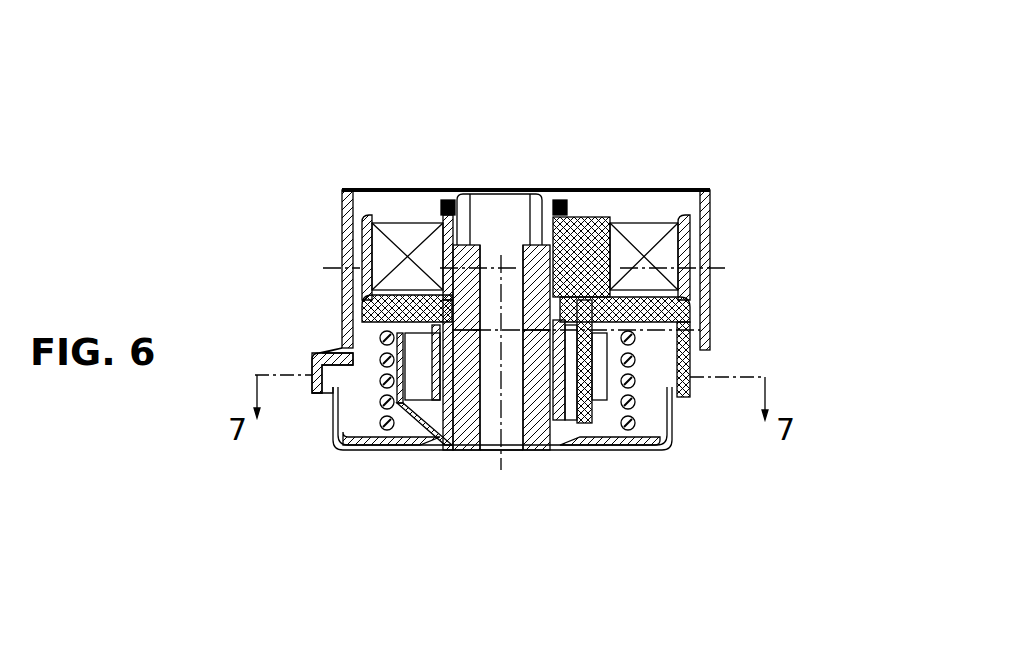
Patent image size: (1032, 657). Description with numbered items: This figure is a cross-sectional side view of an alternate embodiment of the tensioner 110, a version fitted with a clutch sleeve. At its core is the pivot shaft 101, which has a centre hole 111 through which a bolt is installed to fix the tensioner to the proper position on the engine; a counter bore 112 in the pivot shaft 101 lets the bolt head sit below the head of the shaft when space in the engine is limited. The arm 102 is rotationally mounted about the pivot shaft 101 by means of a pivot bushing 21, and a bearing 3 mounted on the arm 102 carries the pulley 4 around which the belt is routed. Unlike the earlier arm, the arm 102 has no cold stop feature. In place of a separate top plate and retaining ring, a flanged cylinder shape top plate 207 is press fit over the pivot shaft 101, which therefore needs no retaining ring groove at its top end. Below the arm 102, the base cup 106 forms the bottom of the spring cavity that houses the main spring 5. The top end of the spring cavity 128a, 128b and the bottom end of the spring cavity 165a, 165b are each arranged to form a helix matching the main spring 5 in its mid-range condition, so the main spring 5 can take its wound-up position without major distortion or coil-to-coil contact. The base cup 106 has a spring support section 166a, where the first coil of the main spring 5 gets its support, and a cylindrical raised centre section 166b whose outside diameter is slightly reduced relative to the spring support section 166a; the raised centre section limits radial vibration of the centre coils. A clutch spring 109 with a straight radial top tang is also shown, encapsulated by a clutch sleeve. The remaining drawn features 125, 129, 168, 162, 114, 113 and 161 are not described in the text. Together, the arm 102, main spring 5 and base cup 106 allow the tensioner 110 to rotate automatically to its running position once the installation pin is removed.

The tensioner 110 is at (270, 92).
The counter bore 112 is at (470, 192).
The centre hole 111 is at (495, 200).
The pivot shaft 101 is at (512, 200).
The pivot bushing 21 is at (572, 220).
The arm 102 is at (598, 228).
The bearing 3 is at (657, 230).
The pulley 4 is at (710, 212).
The flanged cylinder shape top plate 207 is at (438, 205).
The top end of the spring cavity 128a is at (360, 320).
The top end of the spring cavity 128b is at (712, 325).
The flange 125 is at (345, 335).
The main spring 5 is at (692, 358).
The cylindrical raised centre section 166b is at (692, 367).
The spring support section 166a is at (628, 452).
The lip 129 is at (312, 397).
The plate 168 is at (330, 425).
The bottom end of the spring cavity 165a is at (333, 443).
The bottom end of the spring cavity 165b is at (678, 415).
The insert 162 is at (437, 450).
The sleeve 114 is at (462, 448).
The clutch spring 109 is at (493, 448).
The armature 113 is at (520, 448).
The plate 161 is at (533, 450).
The base cup 106 is at (596, 453).